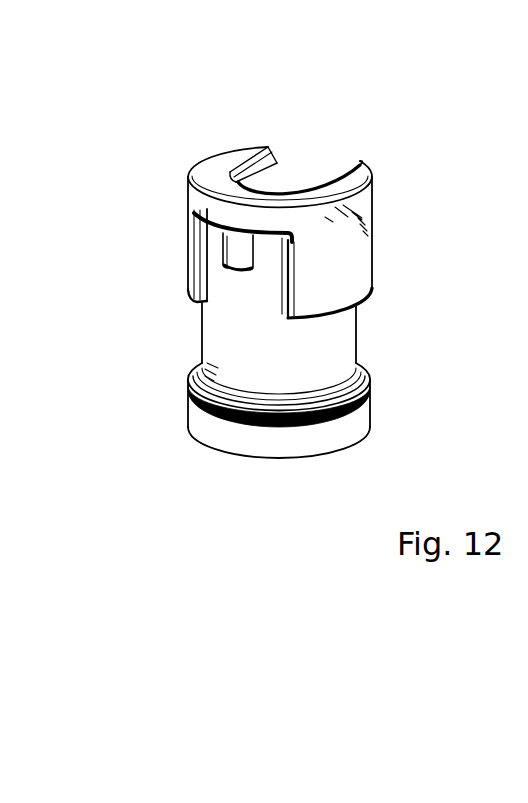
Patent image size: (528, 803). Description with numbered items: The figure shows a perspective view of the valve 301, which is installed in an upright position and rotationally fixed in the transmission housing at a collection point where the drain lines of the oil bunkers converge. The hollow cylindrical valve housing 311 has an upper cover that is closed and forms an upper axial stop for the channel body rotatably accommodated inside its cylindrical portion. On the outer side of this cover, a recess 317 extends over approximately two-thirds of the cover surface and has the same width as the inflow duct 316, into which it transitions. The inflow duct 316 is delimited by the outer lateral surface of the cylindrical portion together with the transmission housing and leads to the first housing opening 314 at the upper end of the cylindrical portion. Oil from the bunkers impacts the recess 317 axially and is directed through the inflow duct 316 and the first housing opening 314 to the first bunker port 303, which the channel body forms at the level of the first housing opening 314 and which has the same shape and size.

The valve 301 is at (209, 138).
The recess 317 is at (302, 178).
The inflow duct 316 is at (213, 234).
The first housing opening 314 is at (243, 253).
The first bunker port 303 is at (232, 265).
The valve housing 311 is at (337, 273).